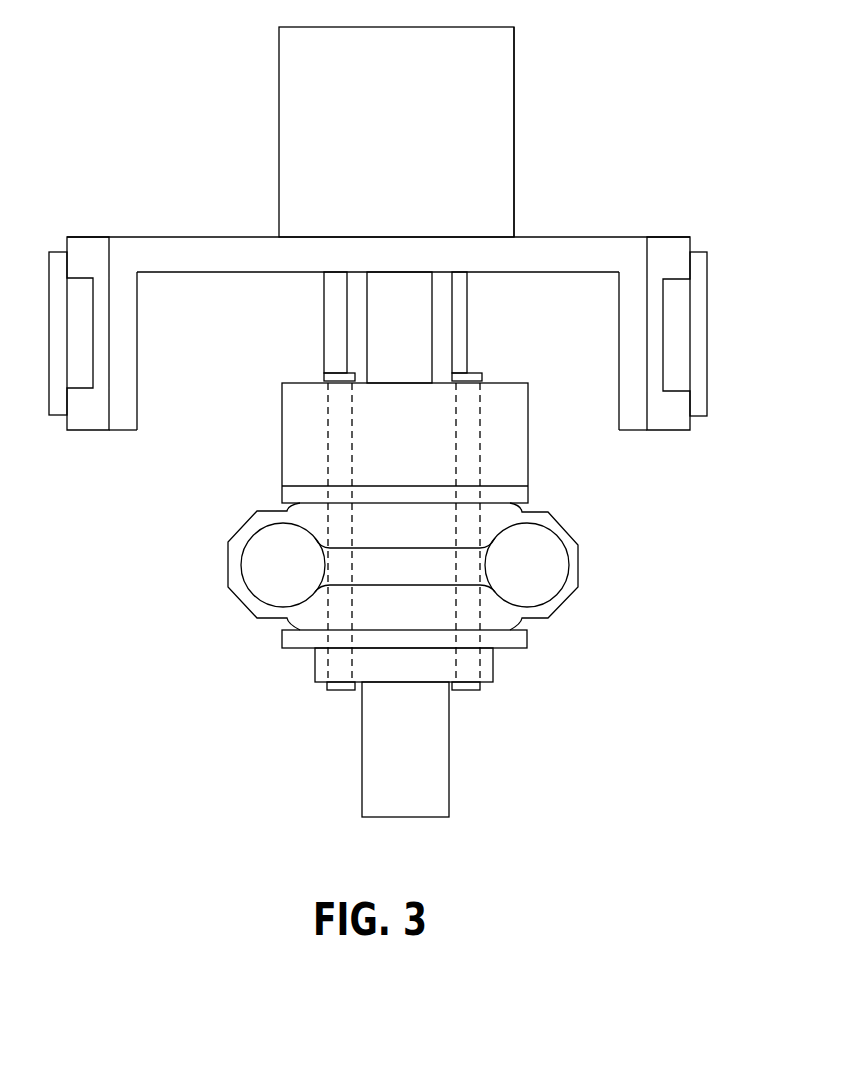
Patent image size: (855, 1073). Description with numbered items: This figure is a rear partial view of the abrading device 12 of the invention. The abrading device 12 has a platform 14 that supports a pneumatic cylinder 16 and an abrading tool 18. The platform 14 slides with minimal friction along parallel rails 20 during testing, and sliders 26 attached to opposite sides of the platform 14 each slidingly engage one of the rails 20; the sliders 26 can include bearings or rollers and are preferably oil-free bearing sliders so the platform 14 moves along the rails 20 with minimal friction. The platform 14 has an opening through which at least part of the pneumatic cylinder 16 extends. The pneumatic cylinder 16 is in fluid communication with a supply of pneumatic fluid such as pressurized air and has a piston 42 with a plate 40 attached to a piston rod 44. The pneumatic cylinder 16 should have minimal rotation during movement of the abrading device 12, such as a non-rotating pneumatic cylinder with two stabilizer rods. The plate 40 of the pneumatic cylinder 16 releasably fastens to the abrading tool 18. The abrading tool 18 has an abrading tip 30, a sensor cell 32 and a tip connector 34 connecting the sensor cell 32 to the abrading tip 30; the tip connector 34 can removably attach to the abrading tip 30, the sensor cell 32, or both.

The abrading device 12 is at (307, 96).
The pneumatic cylinder 16 is at (485, 109).
The platform 14 is at (185, 253).
The slider 26 is at (660, 250).
The rail 20 is at (680, 340).
The piston 42 is at (407, 292).
The piston rod 44 is at (340, 338).
The plate 40 is at (305, 450).
The sensor cell 32 is at (573, 560).
The abrading tool 18 is at (290, 643).
The tip connector 34 is at (487, 663).
The abrading tip 30 is at (435, 770).